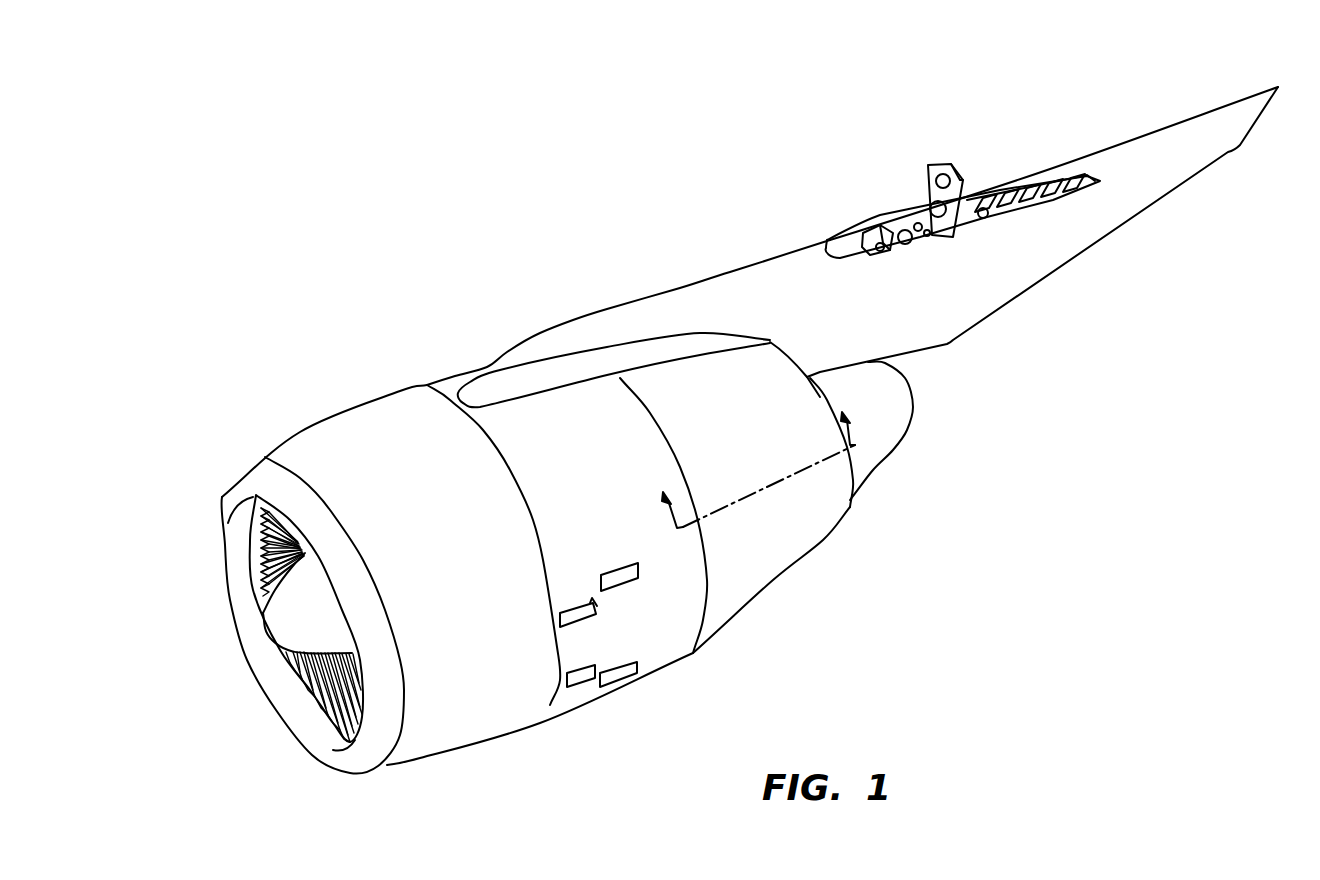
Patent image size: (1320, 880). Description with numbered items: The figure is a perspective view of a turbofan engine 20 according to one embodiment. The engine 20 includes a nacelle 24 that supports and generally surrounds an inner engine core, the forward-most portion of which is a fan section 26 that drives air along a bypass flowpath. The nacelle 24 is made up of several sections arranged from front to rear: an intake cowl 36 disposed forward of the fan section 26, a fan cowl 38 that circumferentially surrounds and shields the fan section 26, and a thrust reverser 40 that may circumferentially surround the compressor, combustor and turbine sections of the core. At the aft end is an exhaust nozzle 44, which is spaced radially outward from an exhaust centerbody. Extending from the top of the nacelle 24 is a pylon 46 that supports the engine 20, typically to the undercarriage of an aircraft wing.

The turbofan engine 20 is at (650, 118).
The nacelle 24 is at (746, 178).
The fan section 26 is at (320, 705).
The intake cowl 36 is at (345, 447).
The fan cowl 38 is at (657, 655).
The thrust reverser 40 is at (778, 577).
The exhaust nozzle 44 is at (870, 460).
The pylon 46 is at (707, 293).